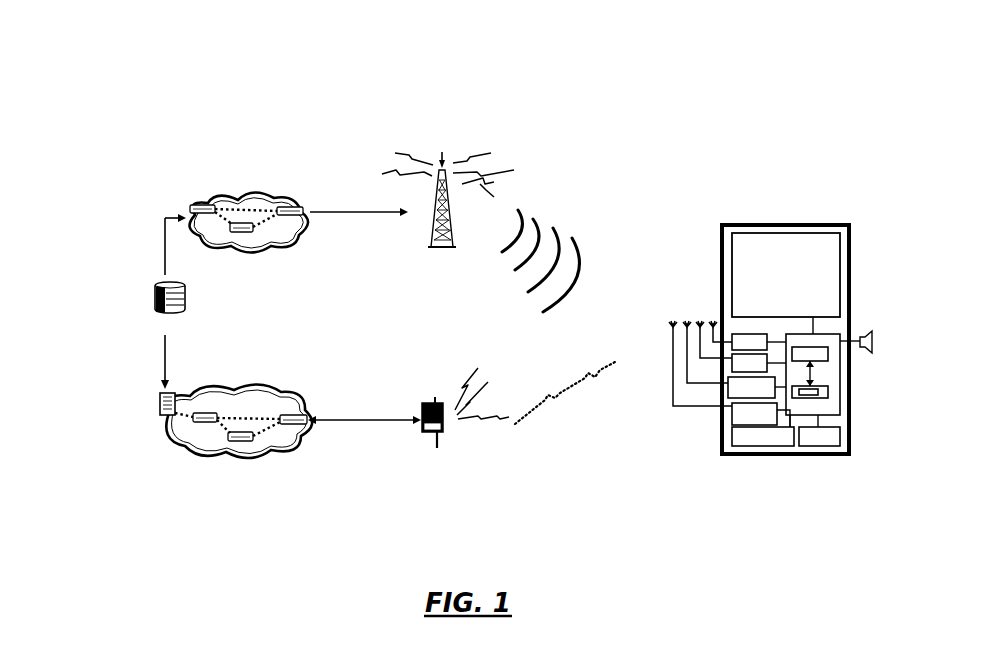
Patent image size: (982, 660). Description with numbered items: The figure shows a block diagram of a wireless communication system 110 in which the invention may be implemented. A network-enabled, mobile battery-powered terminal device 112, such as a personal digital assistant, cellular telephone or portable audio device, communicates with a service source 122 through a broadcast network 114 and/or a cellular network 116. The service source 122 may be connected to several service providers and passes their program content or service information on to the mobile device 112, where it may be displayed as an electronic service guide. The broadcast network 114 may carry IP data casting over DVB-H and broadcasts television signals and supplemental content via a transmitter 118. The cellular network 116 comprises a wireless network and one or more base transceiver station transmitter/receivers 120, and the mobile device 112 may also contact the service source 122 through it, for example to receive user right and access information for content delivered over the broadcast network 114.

The wireless communication system 110 is at (430, 68).
The mobile terminal device 112 is at (762, 455).
The broadcast network 114 is at (278, 198).
The cellular network 116 is at (293, 430).
The transmitter 118 is at (450, 188).
The base transceiver station transmitter/receiver 120 is at (450, 437).
The service source 122 is at (145, 310).